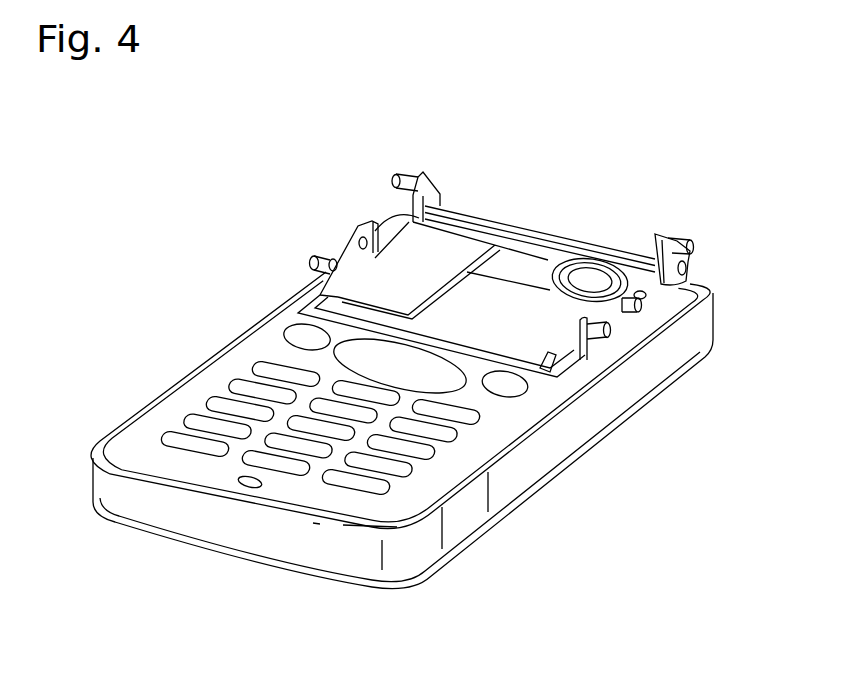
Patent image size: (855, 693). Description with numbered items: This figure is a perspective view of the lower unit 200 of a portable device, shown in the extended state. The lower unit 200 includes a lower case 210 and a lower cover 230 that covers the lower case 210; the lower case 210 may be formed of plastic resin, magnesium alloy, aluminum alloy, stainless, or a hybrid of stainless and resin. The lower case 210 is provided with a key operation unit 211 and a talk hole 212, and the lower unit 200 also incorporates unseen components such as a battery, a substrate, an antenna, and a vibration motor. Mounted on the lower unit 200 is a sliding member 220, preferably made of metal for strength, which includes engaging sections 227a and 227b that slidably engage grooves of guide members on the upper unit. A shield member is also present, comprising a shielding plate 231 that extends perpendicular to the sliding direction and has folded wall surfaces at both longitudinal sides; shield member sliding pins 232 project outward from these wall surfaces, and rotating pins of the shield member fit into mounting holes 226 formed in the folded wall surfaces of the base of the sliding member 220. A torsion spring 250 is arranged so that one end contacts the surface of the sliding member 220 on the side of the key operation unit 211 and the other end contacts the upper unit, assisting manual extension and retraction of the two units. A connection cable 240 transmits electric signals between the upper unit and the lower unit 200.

The lower unit 200 is at (477, 115).
The lower case 210 is at (303, 512).
The key operation unit 211 is at (189, 421).
The talk hole 212 is at (240, 488).
The sliding member 220 is at (333, 240).
The mounting hole 226 is at (692, 268).
The engaging section 227a is at (593, 340).
The engaging section 227b is at (628, 317).
The lower cover 230 is at (505, 487).
The shielding plate 231 is at (580, 227).
The shield member sliding pin 232 is at (397, 172).
The connection cable 240 is at (355, 303).
The torsion spring 250 is at (545, 262).